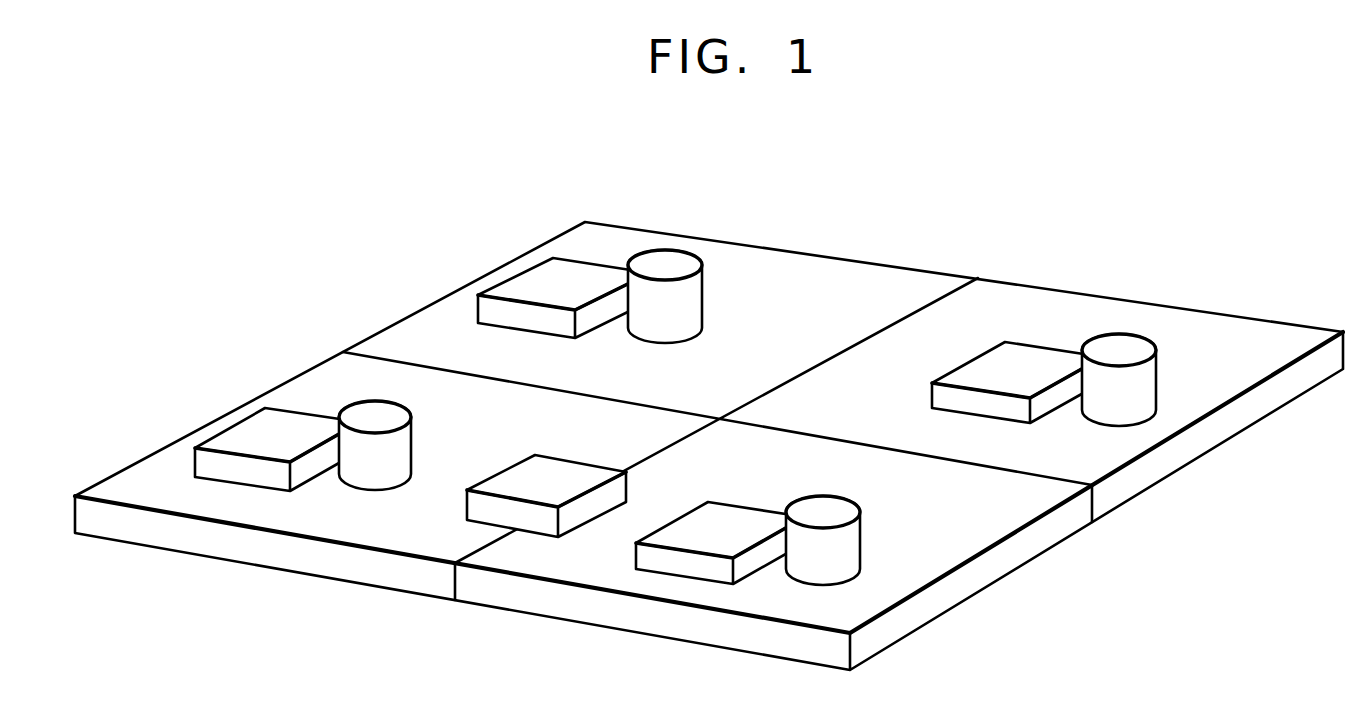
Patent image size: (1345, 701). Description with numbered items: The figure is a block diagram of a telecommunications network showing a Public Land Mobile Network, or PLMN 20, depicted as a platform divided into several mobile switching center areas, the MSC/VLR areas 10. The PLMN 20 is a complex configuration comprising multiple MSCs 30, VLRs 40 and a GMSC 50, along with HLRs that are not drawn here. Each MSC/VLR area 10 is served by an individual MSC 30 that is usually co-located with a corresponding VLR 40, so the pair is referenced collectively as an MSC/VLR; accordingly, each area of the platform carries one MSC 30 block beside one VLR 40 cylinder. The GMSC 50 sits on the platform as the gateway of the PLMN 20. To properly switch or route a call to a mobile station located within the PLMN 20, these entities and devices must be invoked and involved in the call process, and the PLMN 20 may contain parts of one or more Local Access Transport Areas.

The MSC/VLR area 10 is at (343, 365).
The Public Land Mobile Network (PLMN) 20 is at (887, 251).
The mobile switching center (MSC) 30 is at (208, 477).
The visitor location register (VLR) 40 is at (403, 438).
The gateway mobile switching center (GMSC) 50 is at (538, 522).